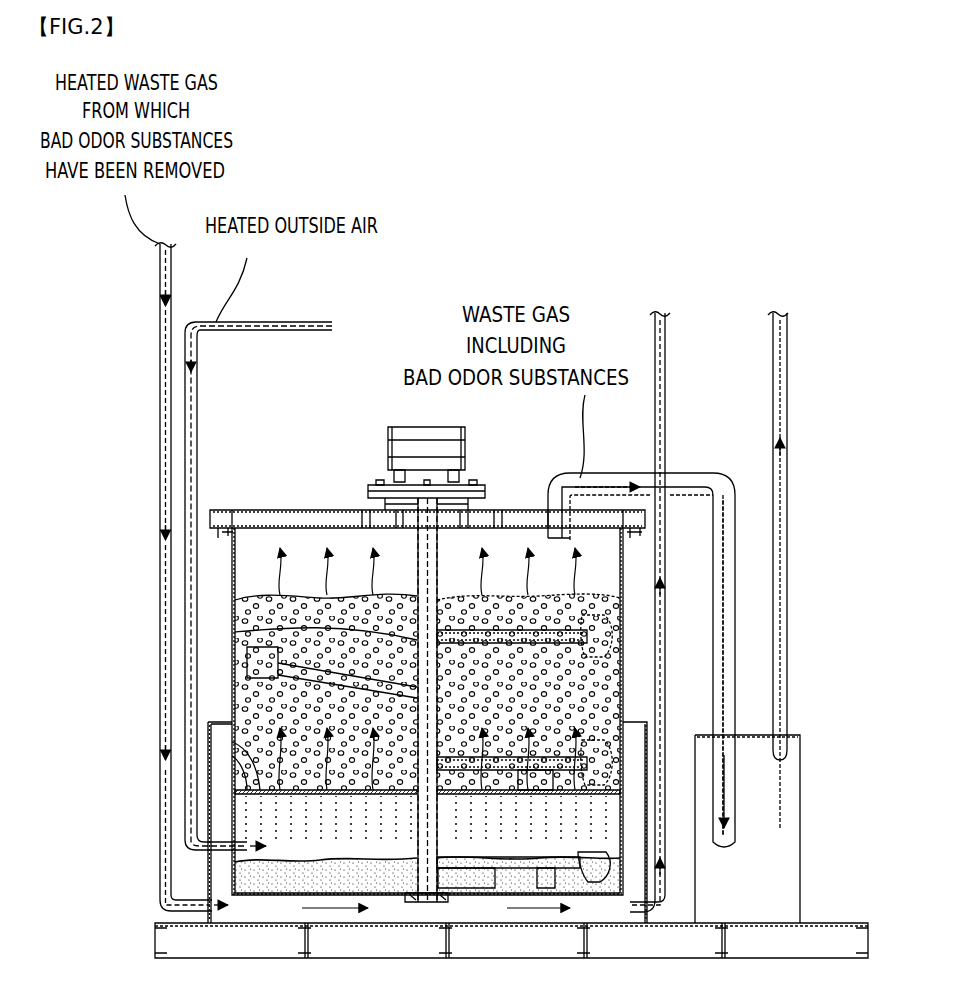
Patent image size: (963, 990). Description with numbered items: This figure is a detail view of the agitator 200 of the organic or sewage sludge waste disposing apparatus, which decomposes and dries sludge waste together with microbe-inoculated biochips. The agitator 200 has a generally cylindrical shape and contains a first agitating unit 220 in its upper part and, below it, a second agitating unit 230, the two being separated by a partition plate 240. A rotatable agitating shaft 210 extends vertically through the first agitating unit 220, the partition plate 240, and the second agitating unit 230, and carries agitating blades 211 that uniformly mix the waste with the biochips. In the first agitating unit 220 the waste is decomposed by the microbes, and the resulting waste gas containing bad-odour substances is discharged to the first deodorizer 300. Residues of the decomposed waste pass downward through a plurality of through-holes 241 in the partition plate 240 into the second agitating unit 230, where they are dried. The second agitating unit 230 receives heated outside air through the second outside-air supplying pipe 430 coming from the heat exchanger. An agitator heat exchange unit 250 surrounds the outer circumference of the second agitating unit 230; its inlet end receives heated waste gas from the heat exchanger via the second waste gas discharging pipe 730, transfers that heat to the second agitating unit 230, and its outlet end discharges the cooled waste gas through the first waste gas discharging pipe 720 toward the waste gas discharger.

The agitator 200 is at (305, 508).
The agitating shaft 210 is at (235, 632).
The agitating blades 211 is at (255, 660).
The first agitating unit 220 is at (250, 582).
The second agitating unit 230 is at (243, 826).
The partition plate 240 is at (232, 756).
The through-holes 241 is at (232, 742).
The agitator heat exchange unit 250 is at (210, 866).
The first deodorizer 300 is at (805, 842).
The second outside-air supplying pipe 430 is at (298, 322).
The first waste gas discharging pipe 720 is at (668, 345).
The second waste gas discharging pipe 730 is at (158, 437).